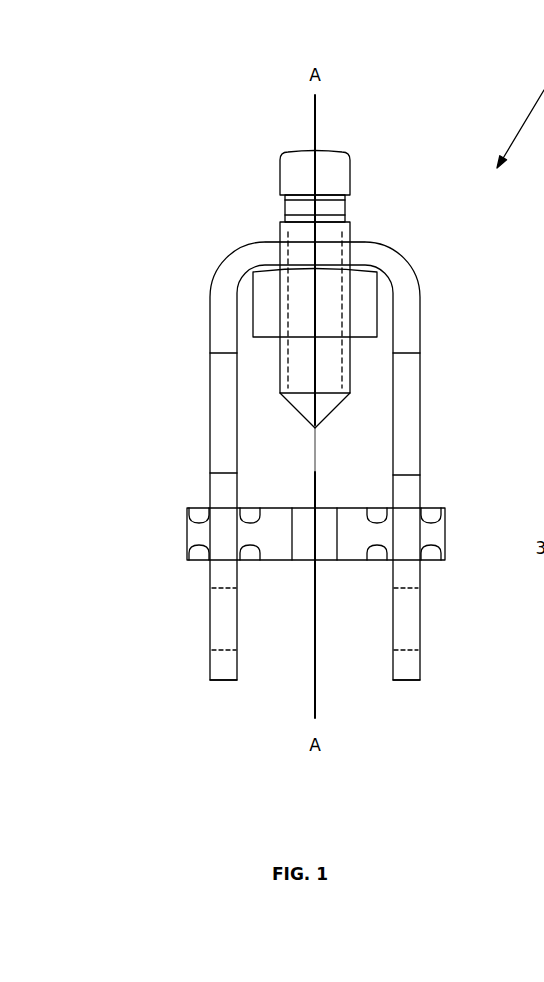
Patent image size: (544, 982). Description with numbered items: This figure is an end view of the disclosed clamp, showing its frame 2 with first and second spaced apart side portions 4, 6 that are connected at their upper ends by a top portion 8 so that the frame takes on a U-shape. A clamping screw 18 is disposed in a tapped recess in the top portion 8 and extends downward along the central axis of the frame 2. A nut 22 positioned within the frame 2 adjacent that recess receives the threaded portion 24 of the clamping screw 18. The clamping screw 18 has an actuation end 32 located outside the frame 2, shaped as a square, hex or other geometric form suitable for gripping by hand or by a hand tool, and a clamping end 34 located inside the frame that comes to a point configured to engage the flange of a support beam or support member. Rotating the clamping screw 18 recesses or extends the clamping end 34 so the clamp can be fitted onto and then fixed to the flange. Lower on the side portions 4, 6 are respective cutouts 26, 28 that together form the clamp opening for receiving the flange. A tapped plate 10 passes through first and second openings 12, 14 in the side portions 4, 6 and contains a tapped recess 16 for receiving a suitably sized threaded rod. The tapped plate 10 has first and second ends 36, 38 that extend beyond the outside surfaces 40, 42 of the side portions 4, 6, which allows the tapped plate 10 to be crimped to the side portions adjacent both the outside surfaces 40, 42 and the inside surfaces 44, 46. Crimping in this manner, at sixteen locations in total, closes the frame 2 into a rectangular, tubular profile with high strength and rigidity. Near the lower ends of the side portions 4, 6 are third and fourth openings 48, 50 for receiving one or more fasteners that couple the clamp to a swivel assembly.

The frame 2 is at (224, 235).
The first side portion 4 is at (203, 308).
The second side portion 6 is at (430, 307).
The top portion 8 is at (379, 231).
The tapped plate 10 is at (187, 542).
The first opening 12 is at (218, 551).
The second opening 14 is at (404, 547).
The tapped recess 16 is at (330, 504).
The clamping screw 18 is at (317, 256).
The nut 22 is at (367, 286).
The threaded portion 24 is at (346, 275).
The first cutout 26 is at (208, 397).
The second cutout 28 is at (420, 406).
The actuation end 32 is at (355, 139).
The clamping end 34 is at (305, 410).
The first end 36 is at (187, 528).
The second end 38 is at (445, 533).
The outside surface of first side portion 40 is at (212, 488).
The outside surface of second side portion 42 is at (418, 480).
The inside surface of first side portion 44 is at (237, 578).
The inside surface of second side portion 46 is at (390, 578).
The third opening 48 is at (210, 627).
The fourth opening 50 is at (418, 635).